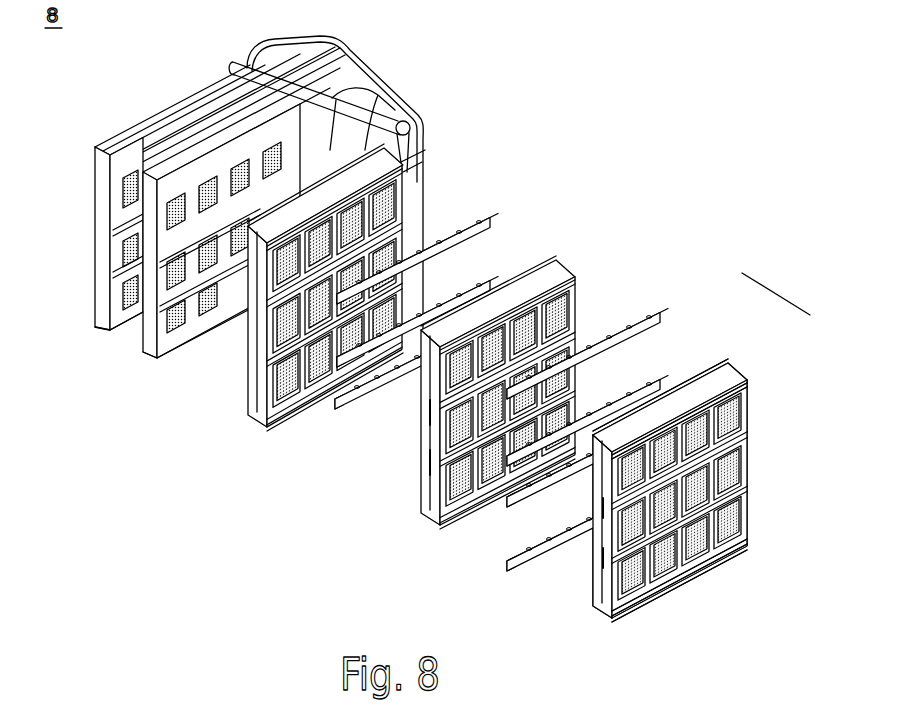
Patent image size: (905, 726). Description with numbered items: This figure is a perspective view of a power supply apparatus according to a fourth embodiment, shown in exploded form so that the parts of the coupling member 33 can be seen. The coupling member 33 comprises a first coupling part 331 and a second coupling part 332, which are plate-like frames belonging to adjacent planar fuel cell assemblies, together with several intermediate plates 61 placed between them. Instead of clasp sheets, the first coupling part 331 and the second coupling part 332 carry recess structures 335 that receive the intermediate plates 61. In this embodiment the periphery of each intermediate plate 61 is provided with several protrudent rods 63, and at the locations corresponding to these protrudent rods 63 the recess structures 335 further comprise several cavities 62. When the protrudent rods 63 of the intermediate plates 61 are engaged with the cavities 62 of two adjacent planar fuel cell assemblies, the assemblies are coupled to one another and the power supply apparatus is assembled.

The cavities 62 is at (407, 172).
The protrudent rods 63 is at (487, 223).
The intermediate plates 61 is at (640, 322).
The coupling member 33 is at (776, 289).
The first coupling part 331 is at (580, 308).
The second coupling part 332 is at (722, 362).
The recess structures 335 is at (577, 277).